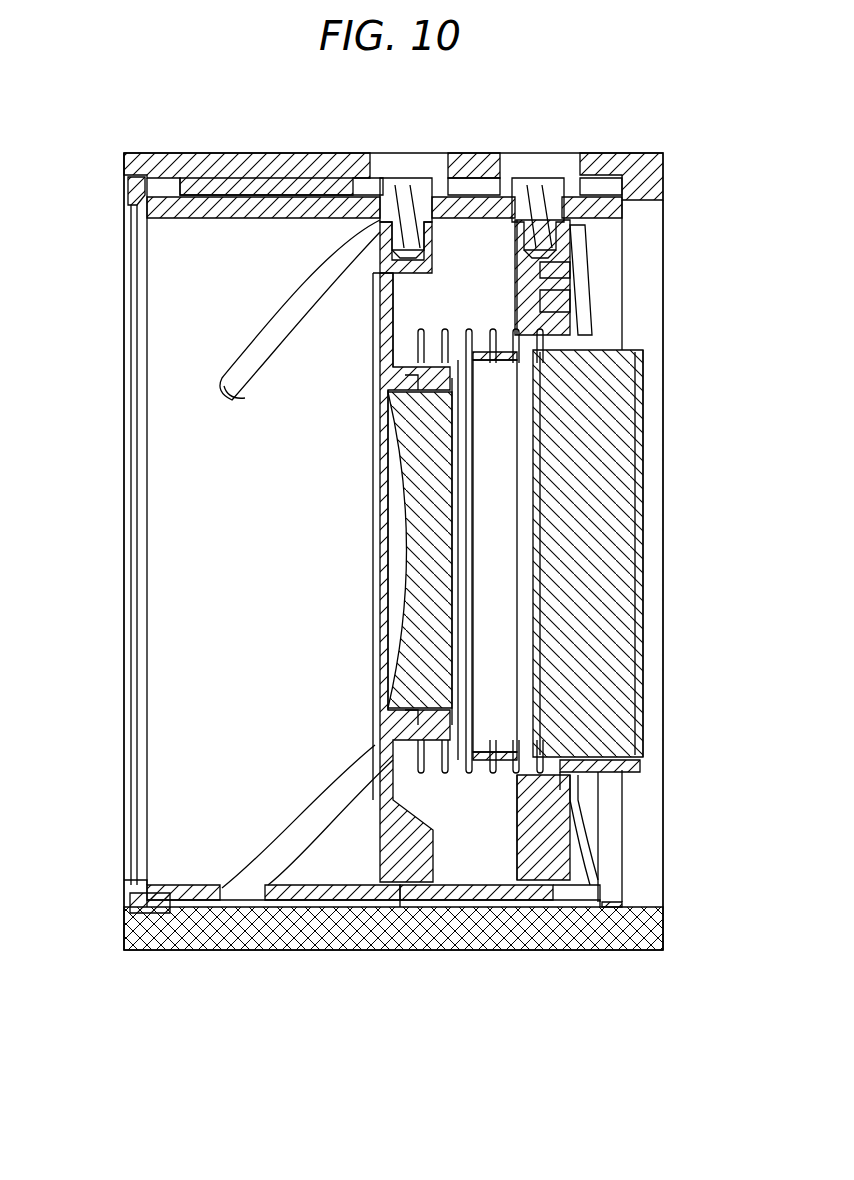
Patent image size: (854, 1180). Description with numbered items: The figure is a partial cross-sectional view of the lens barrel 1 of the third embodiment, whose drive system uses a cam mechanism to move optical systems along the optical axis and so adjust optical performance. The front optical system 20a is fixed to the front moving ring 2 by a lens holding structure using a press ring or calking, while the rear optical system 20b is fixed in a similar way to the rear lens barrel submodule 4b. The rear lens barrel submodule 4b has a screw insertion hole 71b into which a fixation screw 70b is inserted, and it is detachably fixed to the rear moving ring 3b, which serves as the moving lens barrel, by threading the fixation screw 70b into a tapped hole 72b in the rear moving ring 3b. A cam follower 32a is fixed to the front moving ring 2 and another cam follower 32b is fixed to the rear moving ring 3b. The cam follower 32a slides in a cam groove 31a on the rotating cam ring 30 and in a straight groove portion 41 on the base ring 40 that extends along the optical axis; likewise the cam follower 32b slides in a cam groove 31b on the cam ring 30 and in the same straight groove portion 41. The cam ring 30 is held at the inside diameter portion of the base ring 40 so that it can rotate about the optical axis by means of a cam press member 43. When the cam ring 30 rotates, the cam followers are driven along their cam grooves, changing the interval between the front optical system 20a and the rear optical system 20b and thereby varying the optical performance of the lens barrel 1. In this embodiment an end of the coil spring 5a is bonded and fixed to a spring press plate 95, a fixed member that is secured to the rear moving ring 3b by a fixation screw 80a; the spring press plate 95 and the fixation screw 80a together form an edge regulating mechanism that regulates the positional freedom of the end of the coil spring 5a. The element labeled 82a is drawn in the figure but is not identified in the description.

The lens barrel 1 is at (78, 158).
The front moving ring 2 is at (383, 720).
The rear moving ring 3b is at (535, 790).
The rear lens barrel submodule 4b is at (610, 768).
The coil spring 5a is at (390, 885).
The front optical system 20a is at (415, 630).
The rear optical system 20b is at (620, 565).
The cam ring 30 is at (205, 215).
The cam groove 31a is at (235, 896).
The cam groove 31b is at (586, 890).
The cam follower 32a is at (404, 188).
The cam follower 32b is at (535, 188).
The base ring 40 is at (203, 160).
The straight groove portion 41 is at (290, 185).
The cam press member 43 is at (135, 192).
The fixation screw 70b is at (570, 302).
The screw insertion hole 71b is at (575, 272).
The tapped hole 72b is at (580, 240).
The fixation screw 80a is at (500, 800).
The column 82a is at (470, 790).
The spring press plate 95 is at (565, 800).